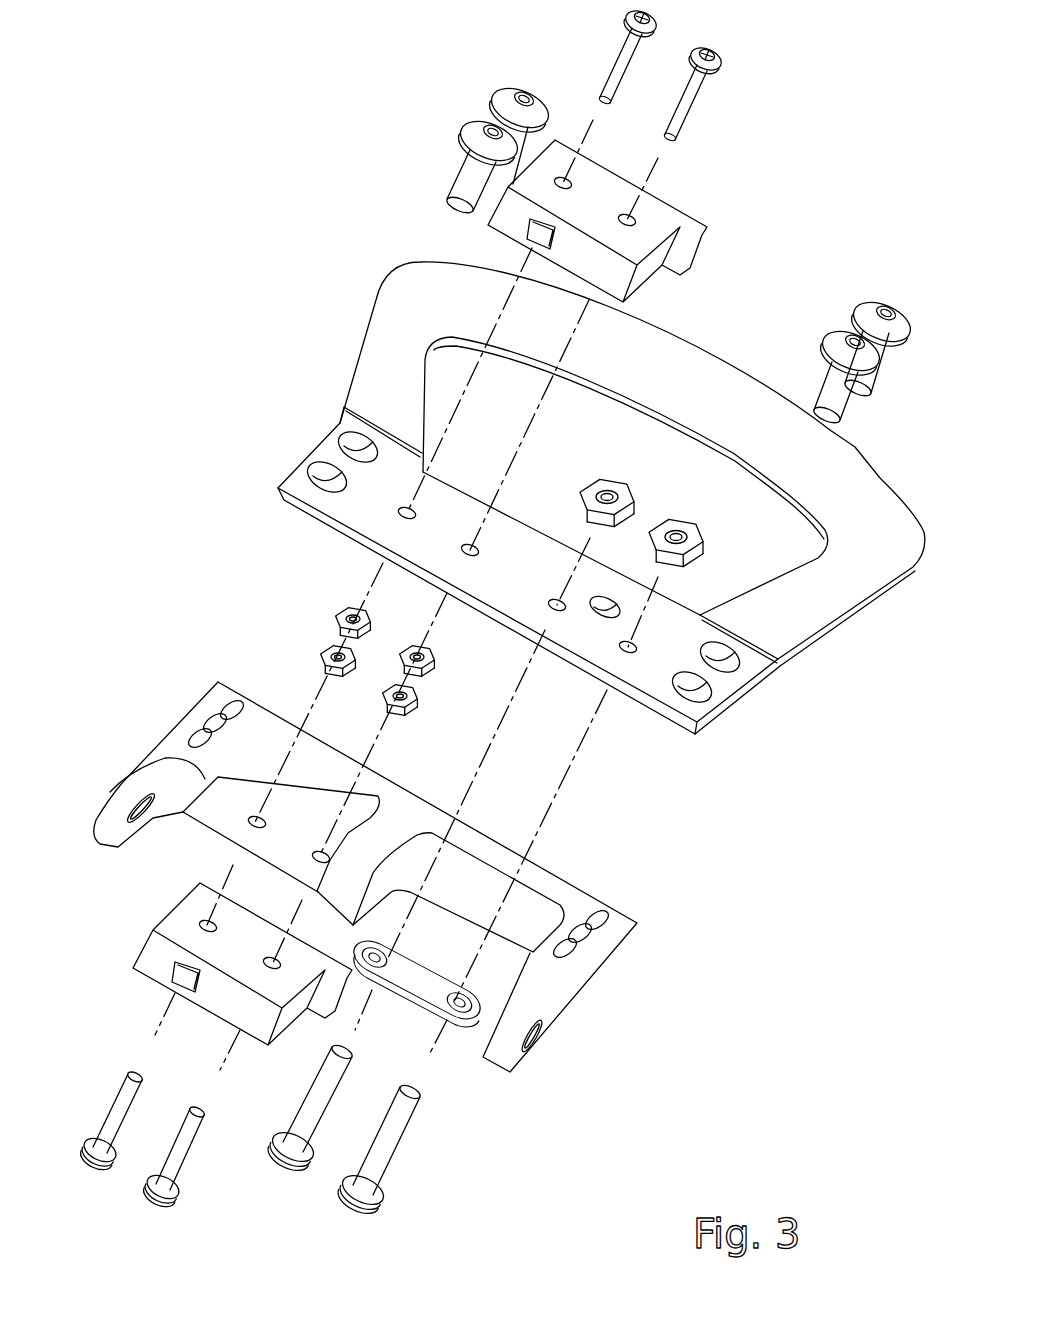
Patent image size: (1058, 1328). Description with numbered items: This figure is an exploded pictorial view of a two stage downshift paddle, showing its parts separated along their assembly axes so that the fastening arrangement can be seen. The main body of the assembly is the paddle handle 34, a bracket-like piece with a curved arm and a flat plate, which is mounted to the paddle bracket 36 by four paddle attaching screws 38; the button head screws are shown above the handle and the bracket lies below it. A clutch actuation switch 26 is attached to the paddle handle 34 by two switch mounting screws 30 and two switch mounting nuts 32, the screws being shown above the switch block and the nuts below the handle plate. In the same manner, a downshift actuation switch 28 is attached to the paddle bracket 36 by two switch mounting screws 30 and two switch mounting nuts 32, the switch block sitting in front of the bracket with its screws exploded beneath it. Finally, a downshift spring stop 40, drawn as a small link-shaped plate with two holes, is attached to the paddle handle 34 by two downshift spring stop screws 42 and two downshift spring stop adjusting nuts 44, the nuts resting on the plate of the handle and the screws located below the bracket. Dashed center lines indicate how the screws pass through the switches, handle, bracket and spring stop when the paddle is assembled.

The clutch actuation switch 26 is at (655, 208).
The downshift actuation switch 28 is at (155, 958).
The switch mounting screws 30 is at (688, 118).
The switch mounting nuts 32 is at (320, 655).
The paddle handle 34 is at (383, 380).
The paddle bracket 36 is at (600, 970).
The paddle attaching screws 38 is at (473, 135).
The downshift spring stop 40 is at (460, 1022).
The downshift spring stop screws 42 is at (385, 1147).
The downshift spring stop adjusting nuts 44 is at (667, 520).